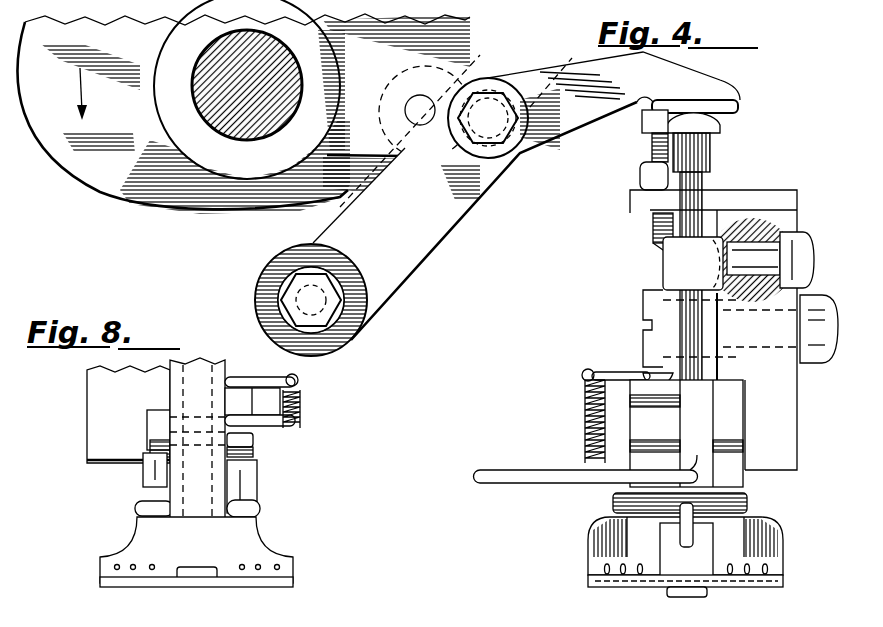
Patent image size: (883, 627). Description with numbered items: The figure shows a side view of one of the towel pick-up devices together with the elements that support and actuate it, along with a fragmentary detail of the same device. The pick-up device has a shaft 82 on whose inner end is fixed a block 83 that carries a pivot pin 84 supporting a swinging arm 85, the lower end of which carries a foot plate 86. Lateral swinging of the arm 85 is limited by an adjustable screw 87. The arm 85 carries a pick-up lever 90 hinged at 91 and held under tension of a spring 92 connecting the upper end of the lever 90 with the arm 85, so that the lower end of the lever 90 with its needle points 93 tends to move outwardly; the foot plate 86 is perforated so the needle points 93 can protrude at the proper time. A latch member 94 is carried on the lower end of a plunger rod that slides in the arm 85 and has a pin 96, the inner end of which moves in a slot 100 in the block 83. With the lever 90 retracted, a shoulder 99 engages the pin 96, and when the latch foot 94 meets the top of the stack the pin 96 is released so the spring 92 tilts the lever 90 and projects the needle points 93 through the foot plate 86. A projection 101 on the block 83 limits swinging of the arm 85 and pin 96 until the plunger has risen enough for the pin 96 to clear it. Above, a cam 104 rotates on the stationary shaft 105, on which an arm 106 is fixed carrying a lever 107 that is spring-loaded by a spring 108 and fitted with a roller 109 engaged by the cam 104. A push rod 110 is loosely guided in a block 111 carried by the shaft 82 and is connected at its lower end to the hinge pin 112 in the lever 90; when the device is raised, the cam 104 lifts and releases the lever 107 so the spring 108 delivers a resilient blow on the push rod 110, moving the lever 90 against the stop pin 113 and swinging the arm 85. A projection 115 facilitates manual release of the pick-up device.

In FIG. 4, the shaft 82 is at (763, 250).
In FIG. 4, the block 83 is at (780, 408).
In FIG. 8, the block 83 is at (100, 388).
In FIG. 4, the pivot pin 84 is at (650, 312).
In FIG. 4, the swinging arm 85 is at (667, 345).
In FIG. 8, the swinging arm 85 is at (200, 372).
In FIG. 4, the foot plate 86 is at (612, 585).
In FIG. 8, the foot plate 86 is at (155, 586).
In FIG. 4, the adjustable screw 87 is at (653, 232).
In FIG. 4, the pick-up lever 90 is at (595, 542).
In FIG. 8, the pick-up lever 90 is at (253, 548).
In FIG. 4, the hinge 91 is at (745, 503).
In FIG. 4, the spring 92 is at (585, 413).
In FIG. 8, the spring 92 is at (302, 405).
In FIG. 4, the needle points 93 is at (765, 575).
In FIG. 4, the latch member 94 is at (683, 597).
In FIG. 8, the latch member 94 is at (200, 585).
In FIG. 8, the pin 96 is at (157, 447).
In FIG. 8, the shoulder 99 is at (242, 475).
In FIG. 8, the slot 100 is at (157, 425).
In FIG. 8, the projection 101 is at (142, 480).
In FIG. 4, the cam 104 is at (125, 188).
In FIG. 4, the stationary shaft 105 is at (210, 62).
In FIG. 4, the arm 106 is at (437, 78).
In FIG. 4, the lever 107 is at (713, 90).
In FIG. 4, the spring 108 is at (578, 54).
In FIG. 4, the roller 109 is at (262, 296).
In FIG. 4, the push rod 110 is at (712, 156).
In FIG. 4, the block 111 is at (677, 270).
In FIG. 4, the hinge pin 112 is at (748, 478).
In FIG. 8, the pin 113 is at (138, 516).
In FIG. 4, the projection 115 is at (503, 478).